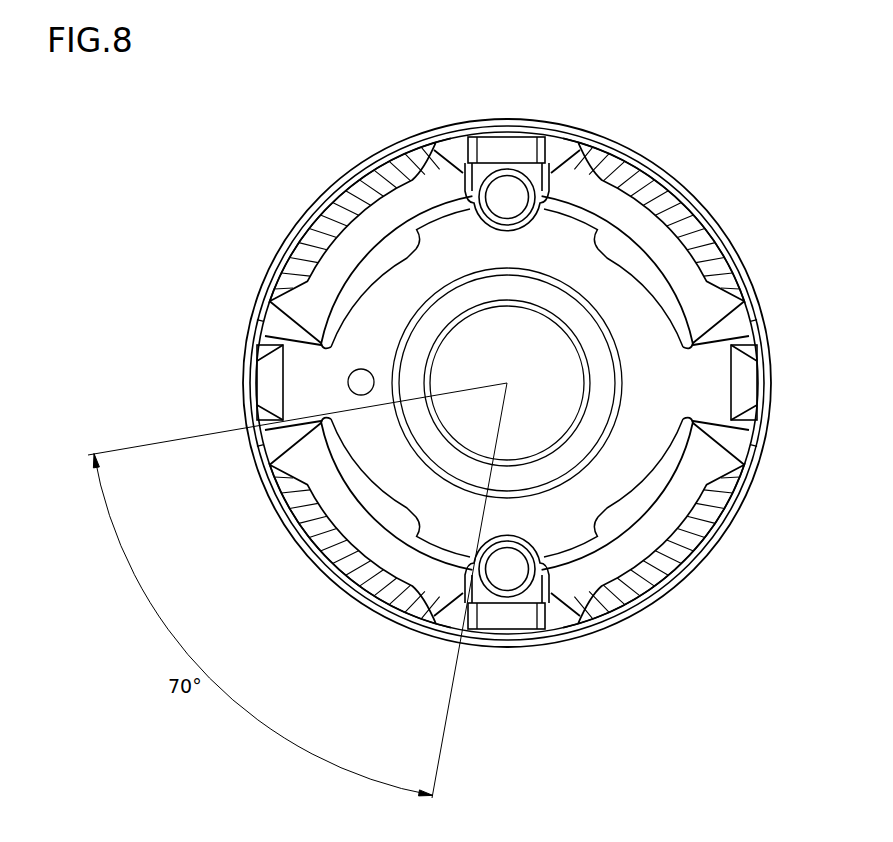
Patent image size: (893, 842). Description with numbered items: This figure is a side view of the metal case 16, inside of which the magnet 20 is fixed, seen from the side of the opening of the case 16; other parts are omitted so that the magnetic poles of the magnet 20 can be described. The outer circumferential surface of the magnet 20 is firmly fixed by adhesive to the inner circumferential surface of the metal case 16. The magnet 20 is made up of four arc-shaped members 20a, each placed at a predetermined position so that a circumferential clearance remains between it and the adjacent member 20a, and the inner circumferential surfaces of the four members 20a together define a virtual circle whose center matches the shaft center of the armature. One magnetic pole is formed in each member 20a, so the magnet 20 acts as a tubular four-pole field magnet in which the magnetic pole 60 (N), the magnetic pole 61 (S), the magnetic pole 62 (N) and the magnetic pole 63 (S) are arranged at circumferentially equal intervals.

The metal case 16 is at (503, 118).
The magnet 20 is at (730, 208).
The arc-shaped member 20a is at (367, 237).
The magnetic pole 60 is at (320, 230).
The magnetic pole 61 is at (697, 287).
The magnetic pole 62 is at (697, 515).
The magnetic pole 63 is at (317, 515).